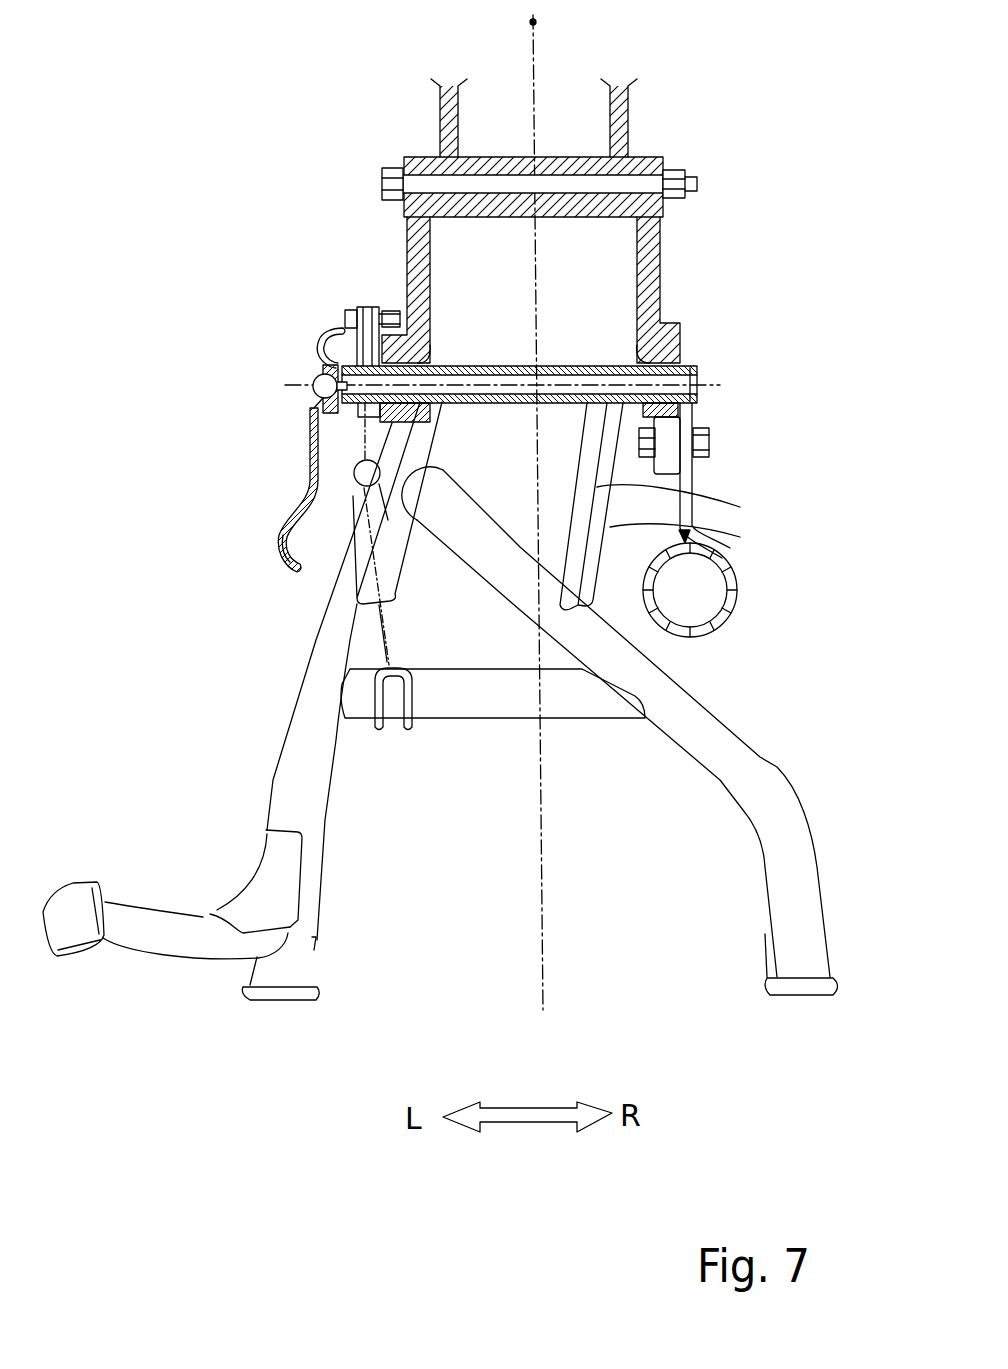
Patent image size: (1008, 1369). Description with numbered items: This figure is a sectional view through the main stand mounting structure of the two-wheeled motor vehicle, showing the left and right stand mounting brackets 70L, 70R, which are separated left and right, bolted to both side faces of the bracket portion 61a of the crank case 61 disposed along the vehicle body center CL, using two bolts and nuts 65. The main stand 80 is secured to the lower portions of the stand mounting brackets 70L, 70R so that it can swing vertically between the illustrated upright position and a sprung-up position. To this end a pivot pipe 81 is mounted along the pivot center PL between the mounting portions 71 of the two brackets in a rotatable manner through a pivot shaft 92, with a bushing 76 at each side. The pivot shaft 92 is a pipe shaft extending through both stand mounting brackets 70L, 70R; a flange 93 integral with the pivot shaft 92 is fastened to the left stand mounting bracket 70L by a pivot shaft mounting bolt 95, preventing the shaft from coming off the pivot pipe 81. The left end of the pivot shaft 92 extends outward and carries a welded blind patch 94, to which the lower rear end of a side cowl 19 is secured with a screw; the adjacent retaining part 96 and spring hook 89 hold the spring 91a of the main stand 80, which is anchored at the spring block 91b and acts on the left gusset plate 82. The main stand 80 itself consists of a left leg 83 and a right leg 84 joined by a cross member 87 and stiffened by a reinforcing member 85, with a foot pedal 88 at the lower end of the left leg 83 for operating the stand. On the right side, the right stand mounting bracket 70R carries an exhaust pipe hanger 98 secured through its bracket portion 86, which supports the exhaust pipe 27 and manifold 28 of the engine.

The vehicle body center CL is at (547, 22).
The crank case 61 is at (509, 183).
The bracket portion 61a is at (497, 212).
The bolts and nuts 65 is at (385, 182).
The left stand mounting bracket 70L is at (405, 246).
The right stand mounting bracket 70R is at (667, 272).
The bushing 76 is at (422, 362).
The pivot pipe 81 is at (514, 410).
The pivot center PL is at (717, 380).
The mounting portions 71 is at (680, 406).
The flange 93 is at (380, 300).
The blind patch 94 is at (338, 331).
The pivot shaft mounting bolt 95 is at (350, 312).
The pin 96 is at (318, 385).
The pivot shaft 92 is at (312, 437).
The side cowl 19 is at (283, 535).
The spring block 91b is at (312, 450).
The spring 91a is at (360, 563).
The left gusset plate 82 is at (355, 582).
The spring hook 89 is at (393, 662).
The cross member 87 is at (486, 706).
The right leg 84 is at (770, 778).
The reinforcing member 85 is at (607, 485).
The bracket 86 is at (627, 530).
The exhaust pipe hanger 98 is at (693, 462).
The manifold 28 is at (745, 609).
The exhaust pipe 27 is at (730, 624).
The left leg 83 is at (300, 733).
The pedal 88 is at (135, 945).
The main stand 80 is at (275, 777).